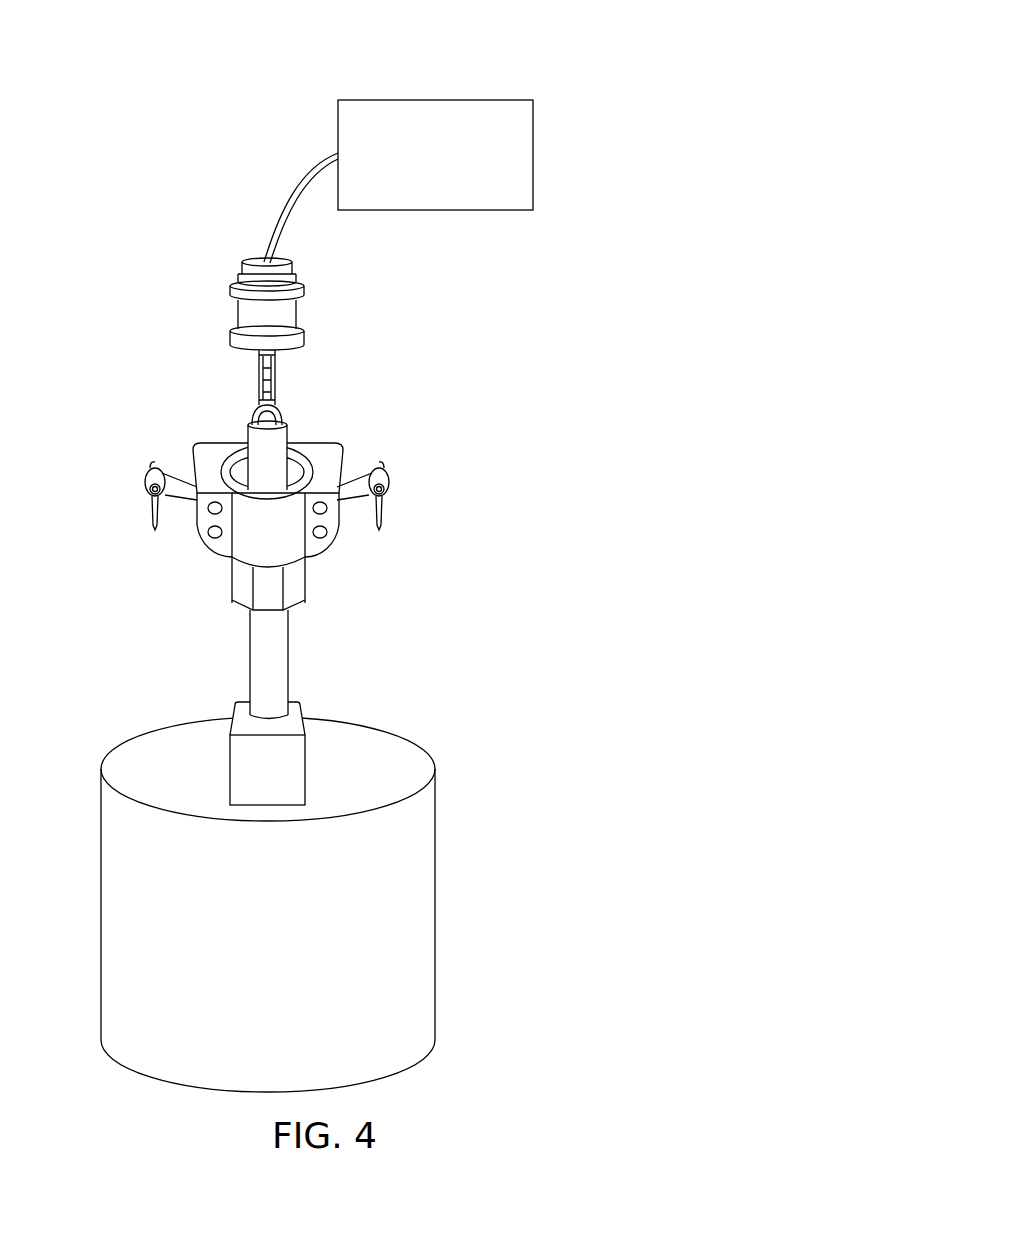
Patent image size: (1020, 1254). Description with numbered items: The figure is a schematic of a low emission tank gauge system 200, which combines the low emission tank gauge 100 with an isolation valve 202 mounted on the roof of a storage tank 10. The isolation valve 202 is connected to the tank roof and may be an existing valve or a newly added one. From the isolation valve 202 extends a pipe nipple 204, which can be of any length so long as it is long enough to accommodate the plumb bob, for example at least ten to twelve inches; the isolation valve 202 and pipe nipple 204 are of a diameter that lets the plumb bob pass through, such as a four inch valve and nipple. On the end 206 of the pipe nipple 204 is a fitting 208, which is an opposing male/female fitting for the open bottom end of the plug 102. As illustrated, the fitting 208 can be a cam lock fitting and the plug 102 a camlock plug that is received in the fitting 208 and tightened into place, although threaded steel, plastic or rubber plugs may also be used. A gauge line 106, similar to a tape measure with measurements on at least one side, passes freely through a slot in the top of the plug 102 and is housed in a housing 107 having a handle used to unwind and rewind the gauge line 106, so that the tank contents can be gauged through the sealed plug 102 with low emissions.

The low emission tank gauge 100 is at (622, 53).
The low emission tank gauge system 200 is at (137, 308).
The housing 107 is at (534, 157).
The gauge line 106 is at (287, 200).
The plug 102 is at (300, 309).
The fitting 208 is at (325, 452).
The end 206 is at (267, 572).
The pipe nipple 204 is at (272, 663).
The isolation valve 202 is at (307, 770).
The storage tank 10 is at (437, 902).